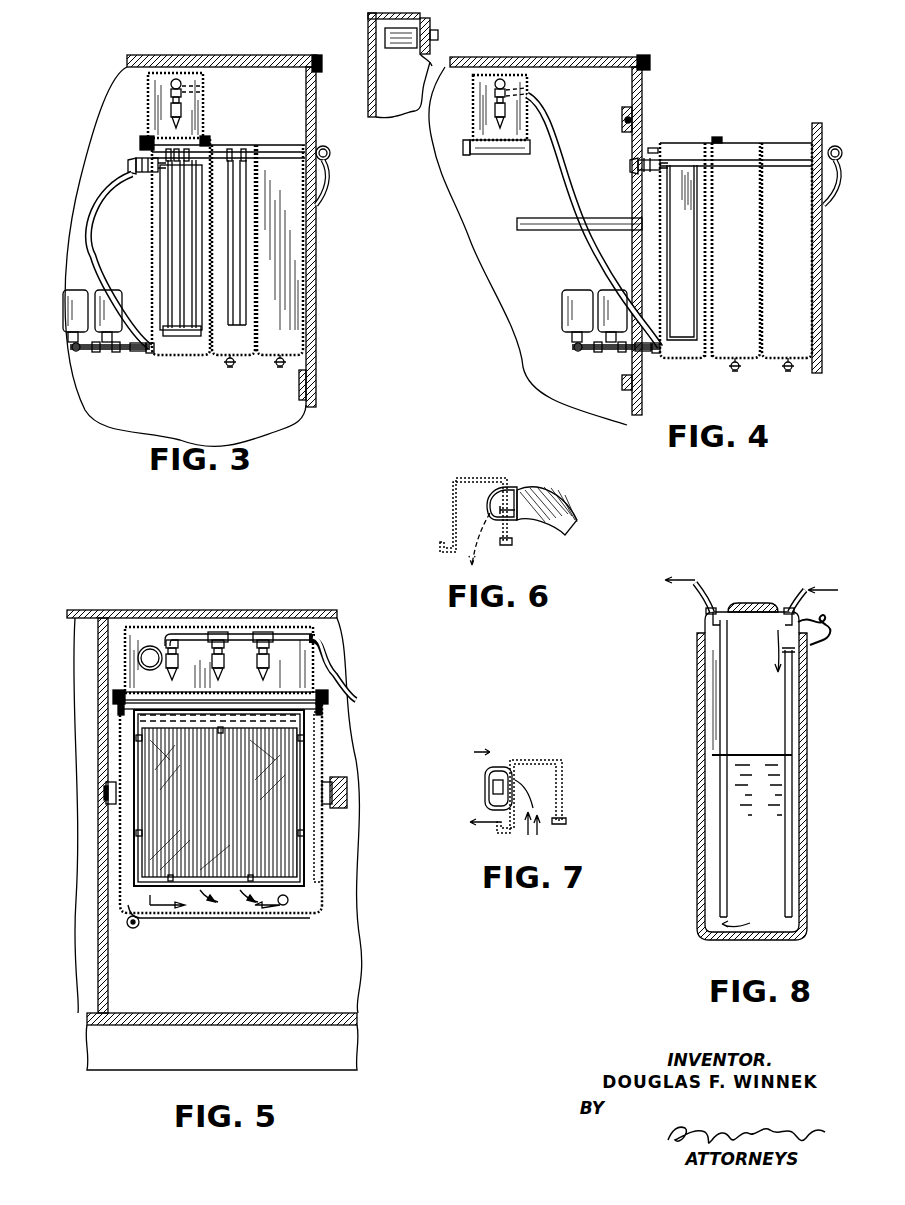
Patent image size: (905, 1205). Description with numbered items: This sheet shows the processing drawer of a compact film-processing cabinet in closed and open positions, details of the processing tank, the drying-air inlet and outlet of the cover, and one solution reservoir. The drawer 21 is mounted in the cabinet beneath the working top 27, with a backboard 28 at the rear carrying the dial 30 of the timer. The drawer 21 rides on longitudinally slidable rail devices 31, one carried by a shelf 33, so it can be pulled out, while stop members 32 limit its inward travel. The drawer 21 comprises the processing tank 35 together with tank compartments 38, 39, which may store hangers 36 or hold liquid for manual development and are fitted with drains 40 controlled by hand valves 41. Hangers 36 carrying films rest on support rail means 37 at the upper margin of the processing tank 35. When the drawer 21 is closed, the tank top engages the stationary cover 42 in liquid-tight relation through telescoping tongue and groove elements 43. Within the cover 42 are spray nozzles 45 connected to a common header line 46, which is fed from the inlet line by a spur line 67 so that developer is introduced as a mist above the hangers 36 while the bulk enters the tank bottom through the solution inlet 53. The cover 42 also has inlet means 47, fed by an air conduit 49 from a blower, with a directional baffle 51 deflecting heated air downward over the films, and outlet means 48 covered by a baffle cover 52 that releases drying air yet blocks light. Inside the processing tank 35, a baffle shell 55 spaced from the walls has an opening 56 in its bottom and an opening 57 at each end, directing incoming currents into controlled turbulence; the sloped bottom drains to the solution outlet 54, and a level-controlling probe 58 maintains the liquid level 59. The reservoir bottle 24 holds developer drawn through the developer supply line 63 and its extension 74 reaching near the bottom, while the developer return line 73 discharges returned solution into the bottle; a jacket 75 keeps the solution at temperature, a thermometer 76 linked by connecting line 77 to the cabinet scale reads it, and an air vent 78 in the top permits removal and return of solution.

In FIG. 3, the drawer 21 is at (316, 256).
In FIG. 4, the drawer 21 is at (818, 375).
In FIG. 8, the reservoir bottle 24 is at (710, 938).
In FIG. 3, the working top 27 is at (230, 55).
In FIG. 4, the working top 27 is at (545, 57).
In FIG. 4, the backboard 28 is at (422, 16).
In FIG. 4, the dial of the timer 30 is at (438, 44).
In FIG. 4, the slidable rail devices 31 is at (535, 230).
In FIG. 5, the slidable rail devices 31 is at (106, 792).
In FIG. 4, the stop members 32 is at (634, 120).
In FIG. 5, the shelf 33 is at (347, 790).
In FIG. 4, the processing tank 35 is at (705, 358).
In FIG. 3, the hangers 36 is at (192, 332).
In FIG. 5, the hangers 36 is at (297, 860).
In FIG. 5, the support rail means 37 is at (128, 712).
In FIG. 4, the tank compartment 38 is at (745, 143).
In FIG. 4, the tank compartment 39 is at (782, 143).
In FIG. 4, the drains 40 is at (786, 371).
In FIG. 4, the hand valves 41 is at (740, 370).
In FIG. 3, the cover 42 is at (204, 78).
In FIG. 4, the cover 42 is at (473, 82).
In FIG. 5, the cover 42 is at (155, 630).
In FIG. 6, the cover 42 is at (450, 490).
In FIG. 4, the tongue and groove elements 43 is at (530, 143).
In FIG. 5, the tongue and groove elements 43 is at (115, 694).
In FIG. 3, the spray nozzles 45 is at (170, 112).
In FIG. 4, the spray nozzles 45 is at (494, 112).
In FIG. 5, the spray nozzles 45 is at (262, 650).
In FIG. 4, the common header line 46 is at (406, 50).
In FIG. 5, the common header line 46 is at (285, 636).
In FIG. 6, the inlet means 47 is at (526, 481).
In FIG. 5, the outlet means 48 is at (150, 645).
In FIG. 7, the outlet means 48 is at (524, 770).
In FIG. 6, the air conduit 49 is at (565, 492).
In FIG. 6, the directional baffle 51 is at (490, 495).
In FIG. 7, the baffle cover 52 is at (486, 782).
In FIG. 3, the solution inlet 53 is at (157, 352).
In FIG. 4, the solution inlet 53 is at (672, 352).
In FIG. 5, the solution inlet 53 is at (282, 905).
In FIG. 5, the solution outlet 54 is at (135, 928).
In FIG. 3, the baffle shell 55 is at (178, 345).
In FIG. 4, the baffle shell 55 is at (712, 277).
In FIG. 5, the baffle shell 55 is at (318, 735).
In FIG. 5, the opening 56 is at (185, 905).
In FIG. 5, the opening 57 is at (134, 845).
In FIG. 3, the level-controlling probe 58 is at (130, 163).
In FIG. 4, the level-controlling probe 58 is at (630, 170).
In FIG. 5, the level-controlling probe 58 is at (322, 716).
In FIG. 5, the liquid level 59 is at (275, 716).
In FIG. 8, the developer supply line 63 is at (718, 592).
In FIG. 3, the spur line 67 is at (100, 215).
In FIG. 4, the spur line 67 is at (556, 178).
In FIG. 8, the developer return line 73 is at (795, 598).
In FIG. 8, the extension 74 is at (727, 735).
In FIG. 8, the jacket 75 is at (697, 732).
In FIG. 8, the thermometer 76 is at (795, 688).
In FIG. 8, the connecting line 77 is at (818, 640).
In FIG. 8, the air vent 78 is at (750, 603).